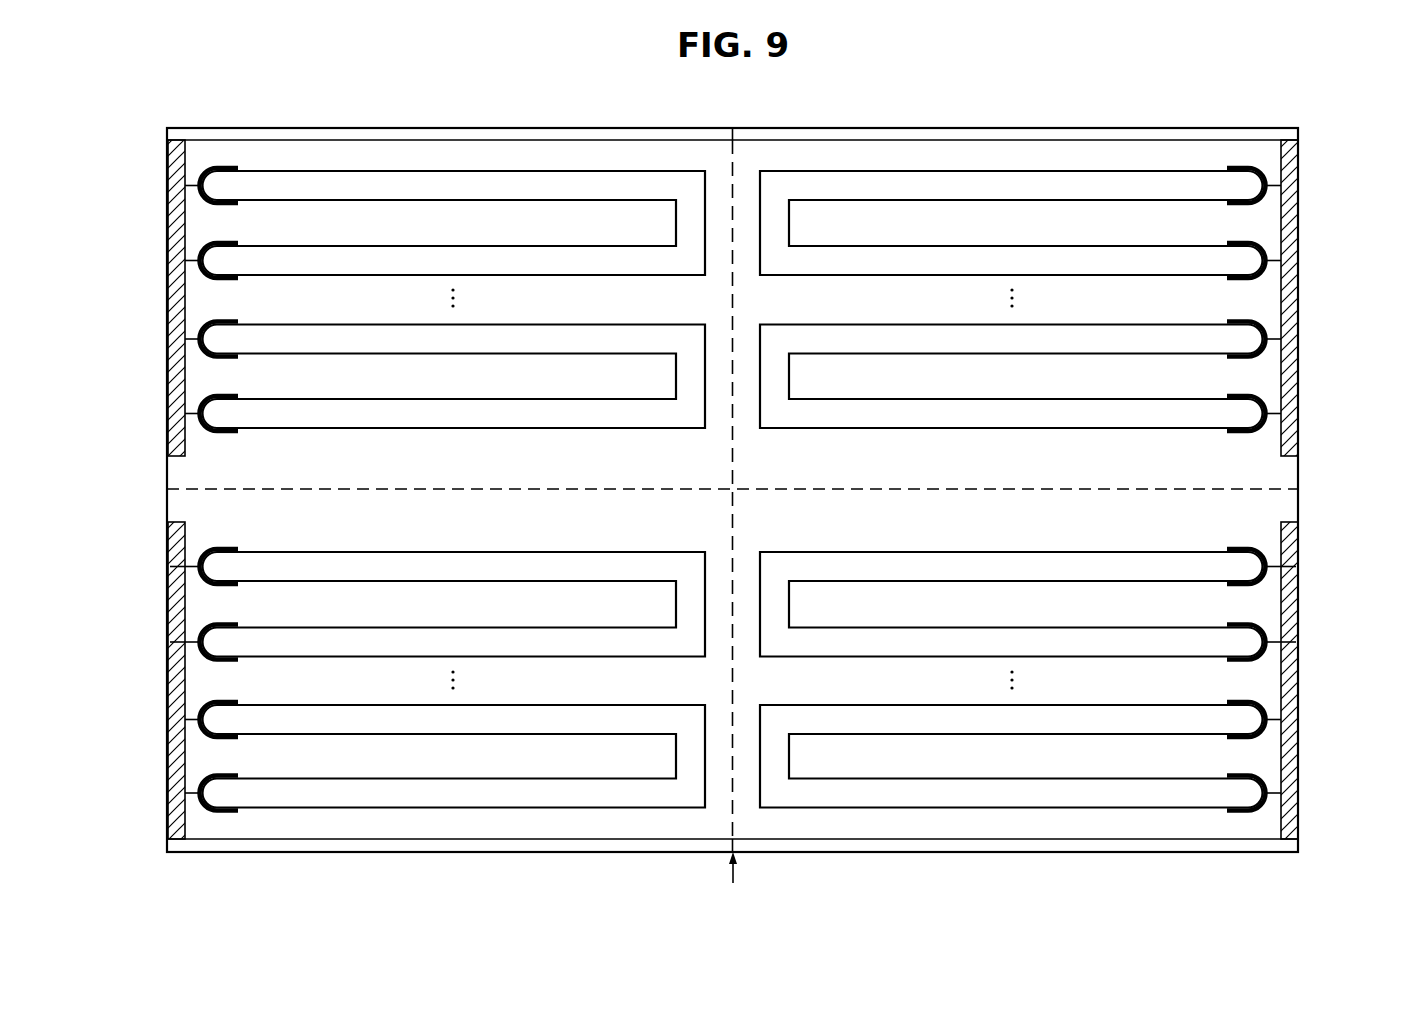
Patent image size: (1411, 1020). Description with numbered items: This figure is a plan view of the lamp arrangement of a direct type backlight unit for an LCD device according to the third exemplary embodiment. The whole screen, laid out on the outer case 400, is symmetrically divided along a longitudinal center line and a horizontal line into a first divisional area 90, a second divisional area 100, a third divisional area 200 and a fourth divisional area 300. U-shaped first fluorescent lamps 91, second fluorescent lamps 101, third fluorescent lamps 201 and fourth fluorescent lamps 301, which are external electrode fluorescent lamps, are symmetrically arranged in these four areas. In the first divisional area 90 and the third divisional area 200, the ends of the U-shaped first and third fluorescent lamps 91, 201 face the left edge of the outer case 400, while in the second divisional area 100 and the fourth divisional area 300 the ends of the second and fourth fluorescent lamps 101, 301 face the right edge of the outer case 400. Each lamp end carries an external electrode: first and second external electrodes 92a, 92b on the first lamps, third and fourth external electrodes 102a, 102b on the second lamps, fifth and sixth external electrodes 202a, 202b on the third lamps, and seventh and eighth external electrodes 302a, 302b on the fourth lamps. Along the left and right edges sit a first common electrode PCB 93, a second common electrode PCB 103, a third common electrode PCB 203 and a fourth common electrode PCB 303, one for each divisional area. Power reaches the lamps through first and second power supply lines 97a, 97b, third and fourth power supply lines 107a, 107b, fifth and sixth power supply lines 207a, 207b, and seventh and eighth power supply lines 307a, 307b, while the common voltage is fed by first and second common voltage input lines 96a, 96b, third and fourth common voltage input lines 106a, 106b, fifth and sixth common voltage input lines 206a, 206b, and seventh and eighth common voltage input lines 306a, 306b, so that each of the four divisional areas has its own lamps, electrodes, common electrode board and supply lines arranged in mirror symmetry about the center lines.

The outer case 400 is at (452, 133).
The first divisional area 90 is at (395, 262).
The first fluorescent lamps 91 is at (568, 180).
The first external electrode 92a is at (219, 166).
The second external electrode 92b is at (205, 238).
The first common electrode PCB 93 is at (175, 250).
The first common voltage input line 96a is at (196, 339).
The second common voltage input line 96b is at (196, 413).
The first power supply line 97a is at (187, 184).
The second power supply line 97b is at (188, 262).
The second divisional area 100 is at (1076, 262).
The second fluorescent lamps 101 is at (890, 180).
The third external electrode 102a is at (1240, 166).
The fourth external electrode 102b is at (1260, 238).
The second common electrode PCB 103 is at (1288, 252).
The third common voltage input line 106a is at (1270, 339).
The fourth common voltage input line 106b is at (1270, 413).
The third power supply line 107a is at (1281, 184).
The fourth power supply line 107b is at (1278, 262).
The third divisional area 200 is at (388, 701).
The third fluorescent lamps 201 is at (350, 800).
The fifth external electrode 202a is at (232, 548).
The sixth external electrode 202b is at (232, 623).
The third common electrode PCB 203 is at (195, 719).
The fifth common voltage input line 206a is at (170, 566).
The sixth common voltage input line 206b is at (170, 642).
The fifth power supply line 207a is at (190, 563).
The sixth power supply line 207b is at (190, 638).
The fourth divisional area 300 is at (1078, 702).
The fourth fluorescent lamps 301 is at (1048, 800).
The seventh external electrode 302a is at (1232, 548).
The eighth external electrode 302b is at (1232, 623).
The fourth common electrode PCB 303 is at (1272, 719).
The seventh common voltage input line 306a is at (1296, 566).
The eighth common voltage input line 306b is at (1296, 642).
The seventh power supply line 307a is at (1285, 562).
The eighth power supply line 307b is at (1285, 638).